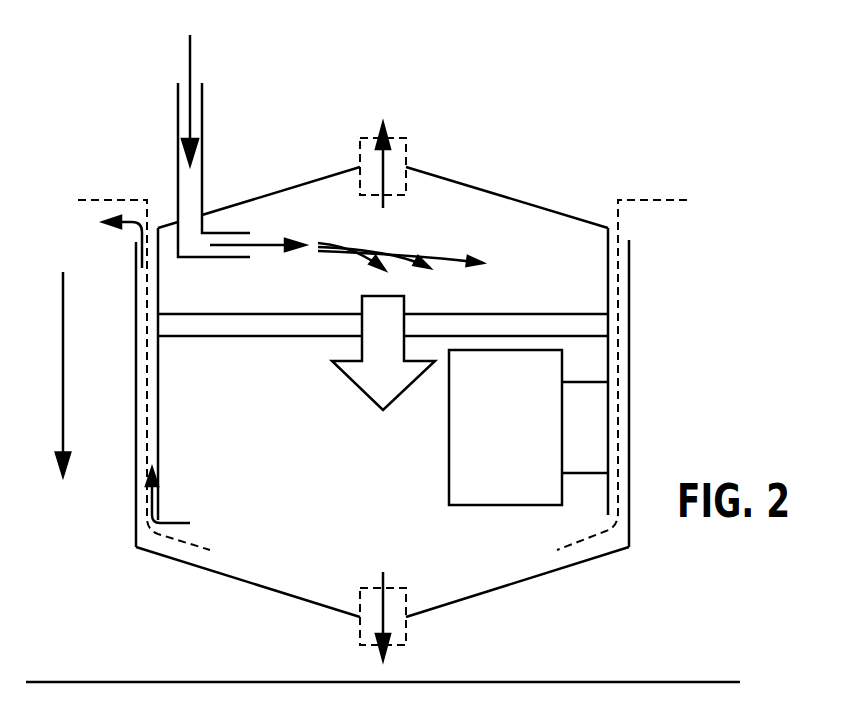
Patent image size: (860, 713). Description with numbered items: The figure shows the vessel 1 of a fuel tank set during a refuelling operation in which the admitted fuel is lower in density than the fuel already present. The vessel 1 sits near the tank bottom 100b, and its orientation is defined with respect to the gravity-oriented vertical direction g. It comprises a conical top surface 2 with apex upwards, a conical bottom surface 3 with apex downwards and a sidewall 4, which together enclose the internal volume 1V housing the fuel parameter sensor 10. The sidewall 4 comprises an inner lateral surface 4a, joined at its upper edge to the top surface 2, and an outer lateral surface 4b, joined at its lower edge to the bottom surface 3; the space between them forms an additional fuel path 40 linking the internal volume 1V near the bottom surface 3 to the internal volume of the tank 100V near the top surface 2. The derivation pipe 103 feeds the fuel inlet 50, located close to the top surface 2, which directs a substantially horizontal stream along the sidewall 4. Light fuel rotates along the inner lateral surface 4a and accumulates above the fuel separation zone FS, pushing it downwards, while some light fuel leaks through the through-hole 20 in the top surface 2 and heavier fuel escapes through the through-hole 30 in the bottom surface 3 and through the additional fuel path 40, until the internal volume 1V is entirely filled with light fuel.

The vessel 1 is at (447, 393).
The top surface 2 is at (333, 172).
The bottom surface 3 is at (333, 610).
The sidewall 4 is at (437, 387).
The inner lateral surface 4a is at (608, 363).
The outer lateral surface 4b is at (710, 317).
The fuel parameter sensor 10 is at (448, 477).
The through-hole 20 is at (395, 138).
The through-hole 30 is at (370, 587).
The additional fuel path 40 is at (107, 200).
The fuel inlet 50 is at (217, 258).
The derivation pipe 103 is at (178, 123).
The tank bottom 100b is at (62, 682).
The internal volume of the tank 100V is at (667, 669).
The internal volume 1V is at (366, 458).
The fuel separation zone FS is at (525, 313).
The gravity-oriented vertical direction g is at (55, 375).